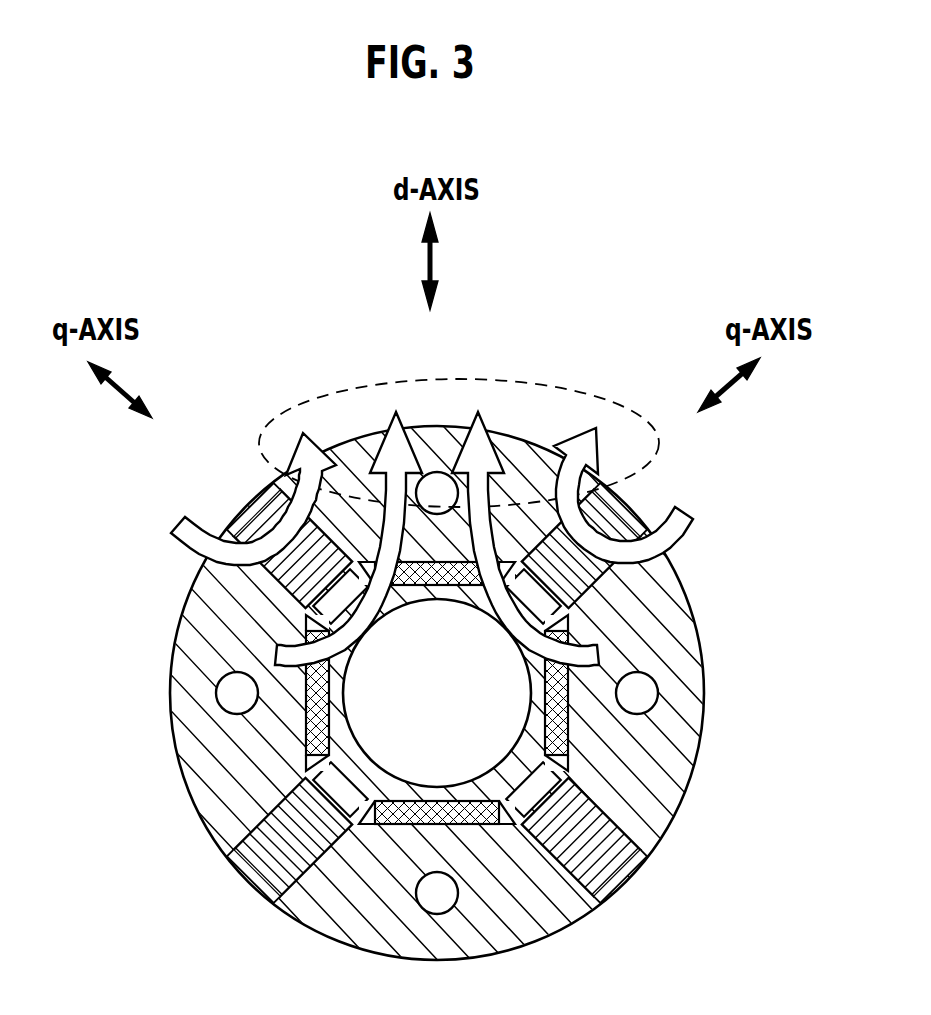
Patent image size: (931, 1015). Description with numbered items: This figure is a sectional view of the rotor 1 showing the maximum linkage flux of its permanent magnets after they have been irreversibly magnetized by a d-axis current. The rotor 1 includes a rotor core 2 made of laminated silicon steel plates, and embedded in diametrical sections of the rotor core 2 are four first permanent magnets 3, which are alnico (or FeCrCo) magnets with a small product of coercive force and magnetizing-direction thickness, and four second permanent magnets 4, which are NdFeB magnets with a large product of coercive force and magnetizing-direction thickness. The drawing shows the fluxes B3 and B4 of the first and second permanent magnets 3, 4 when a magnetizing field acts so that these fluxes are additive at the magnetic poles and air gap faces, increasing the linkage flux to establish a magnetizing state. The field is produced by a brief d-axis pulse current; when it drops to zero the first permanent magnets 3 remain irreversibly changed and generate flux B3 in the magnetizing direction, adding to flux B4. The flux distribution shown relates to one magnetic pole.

The rotor 1 is at (168, 695).
The rotor core 2 is at (203, 763).
The first permanent magnet 3 is at (258, 508).
The second permanent magnet 4 is at (433, 560).
The flux of the first permanent magnet B3 is at (178, 524).
The flux of the second permanent magnet B4 is at (285, 643).